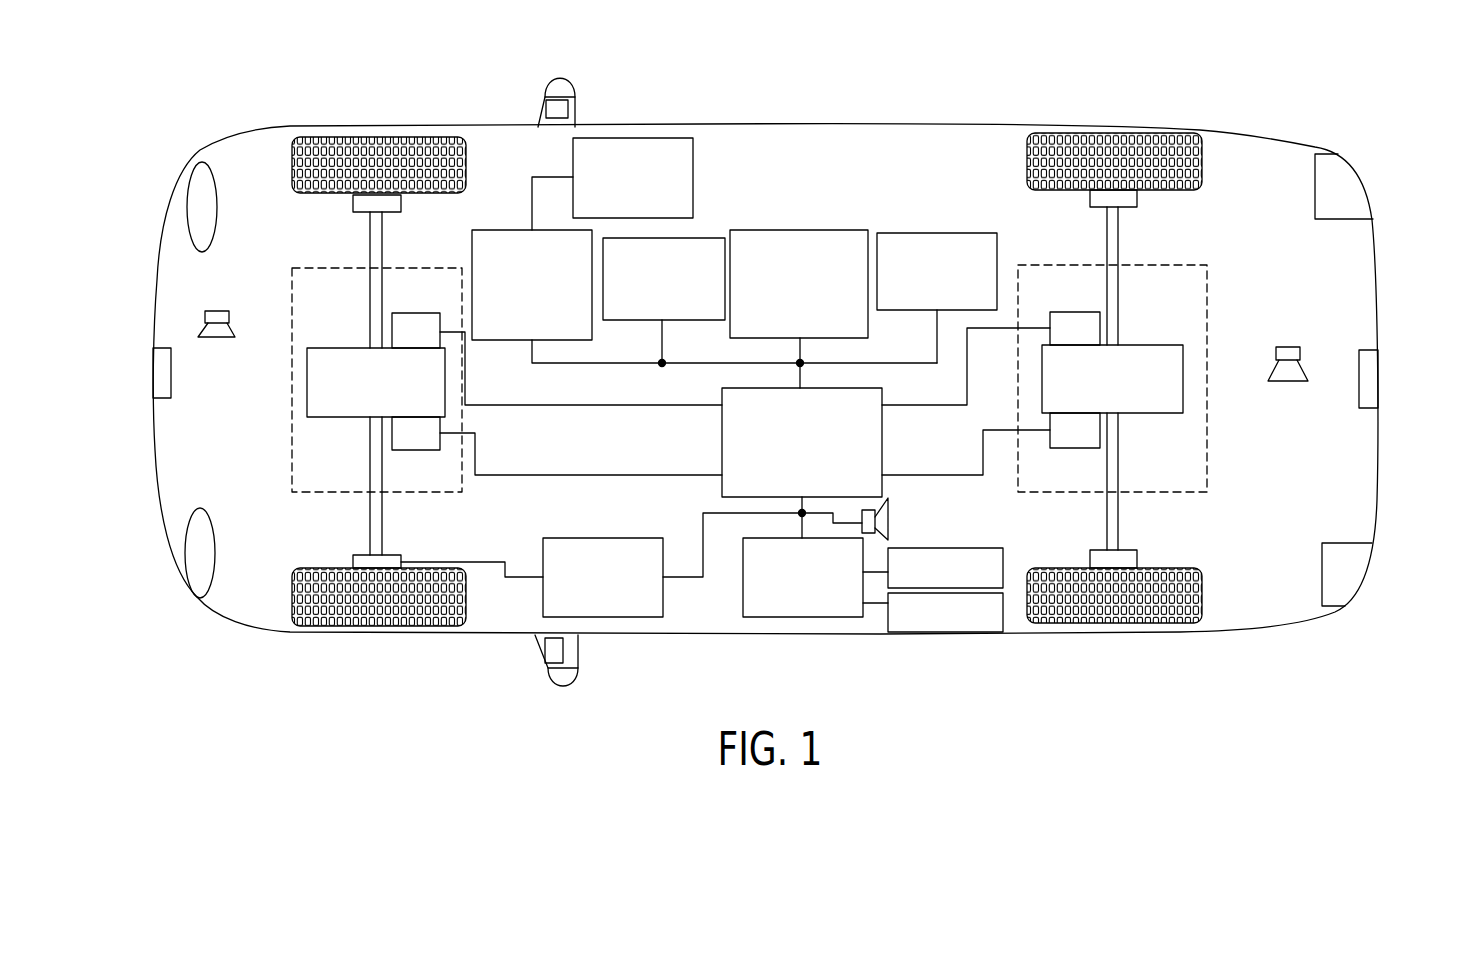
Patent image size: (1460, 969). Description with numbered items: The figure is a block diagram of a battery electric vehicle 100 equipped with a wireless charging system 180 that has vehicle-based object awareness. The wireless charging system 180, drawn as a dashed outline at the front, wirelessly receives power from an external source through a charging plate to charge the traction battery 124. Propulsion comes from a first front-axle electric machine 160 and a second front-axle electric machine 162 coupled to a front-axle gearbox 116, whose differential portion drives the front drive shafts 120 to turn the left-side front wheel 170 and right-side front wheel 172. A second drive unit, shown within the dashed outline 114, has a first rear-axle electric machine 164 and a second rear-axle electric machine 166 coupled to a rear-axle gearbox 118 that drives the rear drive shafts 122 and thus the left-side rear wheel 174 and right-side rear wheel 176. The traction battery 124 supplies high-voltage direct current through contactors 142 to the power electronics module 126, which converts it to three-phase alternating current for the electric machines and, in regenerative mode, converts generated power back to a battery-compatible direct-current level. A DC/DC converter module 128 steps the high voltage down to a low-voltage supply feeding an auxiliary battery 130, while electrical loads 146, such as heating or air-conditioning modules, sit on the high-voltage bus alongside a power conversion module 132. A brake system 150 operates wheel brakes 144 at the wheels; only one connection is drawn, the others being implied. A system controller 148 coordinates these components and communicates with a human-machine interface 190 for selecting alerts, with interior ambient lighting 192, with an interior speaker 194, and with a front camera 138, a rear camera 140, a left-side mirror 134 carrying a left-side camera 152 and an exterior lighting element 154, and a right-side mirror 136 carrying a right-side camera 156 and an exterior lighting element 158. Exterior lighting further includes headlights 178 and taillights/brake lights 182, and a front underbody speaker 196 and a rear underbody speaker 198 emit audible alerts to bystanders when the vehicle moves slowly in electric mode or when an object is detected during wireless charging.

The vehicle 100 is at (1252, 135).
The rear-axle gearbox 114 is at (1207, 290).
The front-axle gearbox 116 is at (330, 348).
The rear axle gearbox 118 is at (1160, 345).
The front drive shafts 120 is at (370, 262).
The rear drive shafts 122 is at (1105, 240).
The traction battery 124 is at (955, 233).
The power electronics module 126 is at (722, 445).
The DC/DC converter module 128 is at (492, 230).
The auxiliary battery 130 is at (588, 138).
The power conversion module 132 is at (858, 230).
The left-side mirror 134 is at (535, 642).
The right-side mirror 136 is at (540, 118).
The front camera 138 is at (163, 398).
The rear camera 140 is at (1359, 400).
The contactors 142 is at (882, 340).
The wheel brakes 144 is at (355, 200).
The electrical loads 146 is at (706, 238).
The vehicle system controller 148 is at (743, 588).
The brake system 150 is at (545, 538).
The left-side camera 152 is at (545, 666).
The exterior lighting element 154 is at (570, 686).
The right-side camera 156 is at (556, 120).
The exterior lighting element 158 is at (560, 78).
The first front-axle electric machine 160 is at (410, 312).
The second front-axle electric machine 162 is at (400, 450).
The first rear-axle electric machine 164 is at (1060, 312).
The second rear-axle electric machine 166 is at (1065, 450).
The left-side front wheel 170 is at (365, 627).
The right-side front wheel 172 is at (292, 172).
The left-side rear wheel 174 is at (1138, 623).
The right-side rear wheel 176 is at (1130, 133).
The headlights 178 is at (160, 572).
The wireless charging system 180 is at (292, 438).
The taillights/brake lights 182 is at (1373, 570).
The human-machine interface 190 is at (975, 548).
The ambient lighting 192 is at (960, 632).
The interior speaker 194 is at (890, 520).
The front underbody speaker 196 is at (218, 310).
The rear underbody speaker 198 is at (1290, 347).